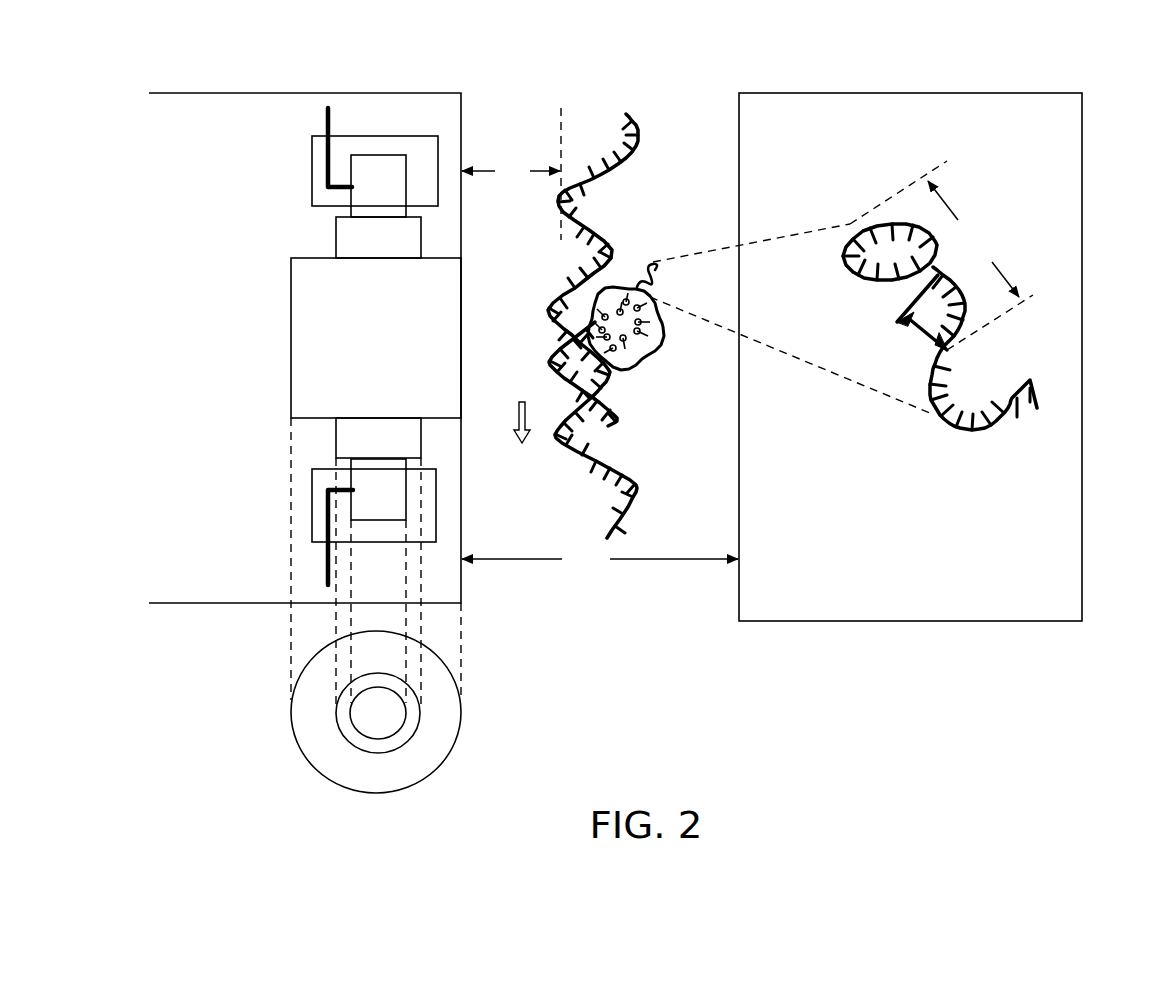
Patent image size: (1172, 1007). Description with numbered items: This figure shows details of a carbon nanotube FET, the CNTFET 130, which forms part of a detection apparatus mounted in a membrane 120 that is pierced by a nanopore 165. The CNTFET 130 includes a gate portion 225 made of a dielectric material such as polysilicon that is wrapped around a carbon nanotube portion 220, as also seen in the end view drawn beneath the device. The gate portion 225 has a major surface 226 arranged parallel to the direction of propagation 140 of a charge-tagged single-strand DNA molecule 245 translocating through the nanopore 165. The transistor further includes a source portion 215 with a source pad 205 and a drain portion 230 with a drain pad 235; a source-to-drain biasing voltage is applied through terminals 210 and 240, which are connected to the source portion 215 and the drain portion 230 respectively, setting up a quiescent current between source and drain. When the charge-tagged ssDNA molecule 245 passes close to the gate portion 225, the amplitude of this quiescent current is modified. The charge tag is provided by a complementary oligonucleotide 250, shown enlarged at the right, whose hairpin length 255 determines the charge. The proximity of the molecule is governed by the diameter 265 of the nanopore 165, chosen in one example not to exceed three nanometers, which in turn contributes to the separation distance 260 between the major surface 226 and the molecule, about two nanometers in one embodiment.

The membrane 120 is at (152, 133).
The carbon nanotube FET (CNTFET) 130 is at (176, 311).
The direction of propagation 140 is at (528, 423).
The nanopore 165 is at (505, 90).
The source pad 205 is at (312, 186).
The terminal 210 is at (328, 125).
The source portion 215 is at (362, 200).
The carbon nanotube portion 220 is at (362, 246).
The gate portion 225 is at (362, 321).
The major surface 226 is at (466, 355).
The drain portion 230 is at (362, 491).
The drain pad 235 is at (312, 505).
The terminal 240 is at (327, 552).
The charge-tagged single-strand DNA molecule 245 is at (648, 170).
The oligonucleotide 250 is at (1072, 311).
The hairpin length 255 is at (941, 255).
The separation distance 260 is at (511, 174).
The diameter 265 is at (600, 558).